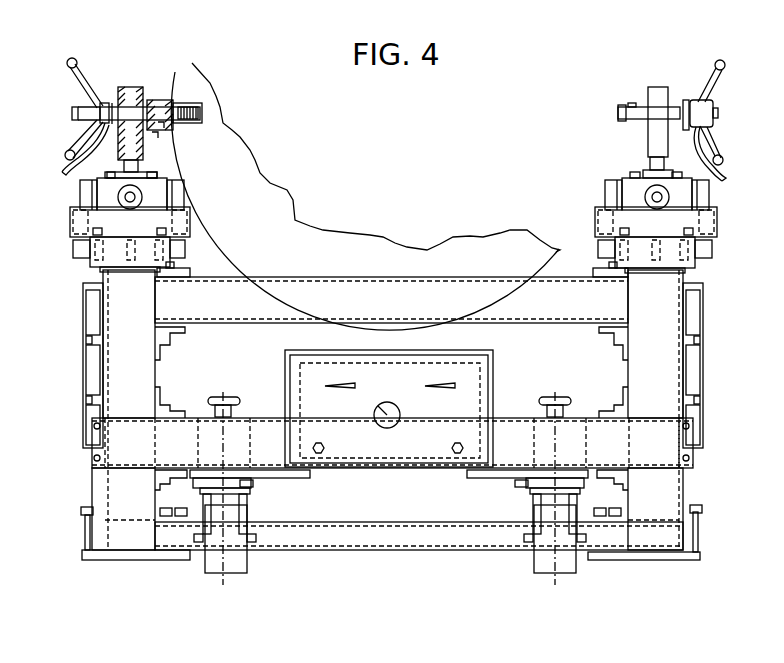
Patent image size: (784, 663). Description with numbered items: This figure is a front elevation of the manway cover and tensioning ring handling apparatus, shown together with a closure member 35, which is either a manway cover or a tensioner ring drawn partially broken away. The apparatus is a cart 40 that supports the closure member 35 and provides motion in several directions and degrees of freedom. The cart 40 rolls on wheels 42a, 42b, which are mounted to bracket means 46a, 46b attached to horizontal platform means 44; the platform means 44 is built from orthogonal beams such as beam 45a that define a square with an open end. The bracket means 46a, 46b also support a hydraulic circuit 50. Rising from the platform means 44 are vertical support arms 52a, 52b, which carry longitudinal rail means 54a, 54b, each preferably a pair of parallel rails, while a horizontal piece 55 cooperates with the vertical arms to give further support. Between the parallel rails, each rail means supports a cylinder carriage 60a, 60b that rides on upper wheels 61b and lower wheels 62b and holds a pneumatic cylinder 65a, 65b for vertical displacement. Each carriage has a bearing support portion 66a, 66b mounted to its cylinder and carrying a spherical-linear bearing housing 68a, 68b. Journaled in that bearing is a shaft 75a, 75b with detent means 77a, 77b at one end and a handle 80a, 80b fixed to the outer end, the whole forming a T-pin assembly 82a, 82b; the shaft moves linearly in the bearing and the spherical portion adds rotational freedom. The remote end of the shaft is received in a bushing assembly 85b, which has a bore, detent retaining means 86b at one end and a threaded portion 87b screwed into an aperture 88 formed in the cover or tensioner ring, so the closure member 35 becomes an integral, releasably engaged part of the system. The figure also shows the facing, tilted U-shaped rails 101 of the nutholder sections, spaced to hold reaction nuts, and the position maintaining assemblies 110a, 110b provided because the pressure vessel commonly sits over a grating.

The closure member 35 is at (277, 197).
The cart 40 is at (248, 364).
The wheel 42a is at (538, 572).
The wheel 42b is at (238, 572).
The horizontal platform means 44 is at (381, 543).
The beam 45a is at (294, 532).
The bracket means 46a is at (513, 478).
The bracket means 46b is at (257, 481).
The hydraulic circuit 50 is at (410, 458).
The vertical support arm 52a is at (678, 283).
The vertical support arm 52b is at (108, 275).
The longitudinal rail means 54a is at (600, 223).
The longitudinal rail means 54b is at (75, 223).
The horizontal piece 55 is at (566, 289).
The cylinder carriage 60a is at (630, 188).
The cylinder carriage 60b is at (150, 185).
The upper wheel 61b is at (80, 195).
The lower wheel 62b is at (75, 245).
The pneumatic cylinder 65a is at (648, 297).
The pneumatic cylinder 65b is at (101, 326).
The bearing support portion 66a is at (645, 163).
The bearing support portion 66b is at (120, 165).
The spherical-linear bearing housing 68a is at (665, 88).
The spherical-linear bearing housing 68b is at (161, 100).
The shaft 75a is at (625, 109).
The shaft 75b is at (145, 108).
The detent means 77a is at (630, 104).
The detent means 77b is at (150, 109).
The handle 80a is at (737, 69).
The handle 80b is at (73, 58).
The T-pin assembly 82a is at (702, 98).
The T-pin assembly 82b is at (88, 82).
The bushing assembly 85b is at (152, 134).
The detent retaining means 86b is at (160, 128).
The threaded portion 87b is at (203, 111).
The aperture 88 is at (195, 104).
The U-shaped rail 101 is at (85, 358).
The position maintaining assembly 110a is at (555, 397).
The position maintaining assembly 110b is at (223, 397).